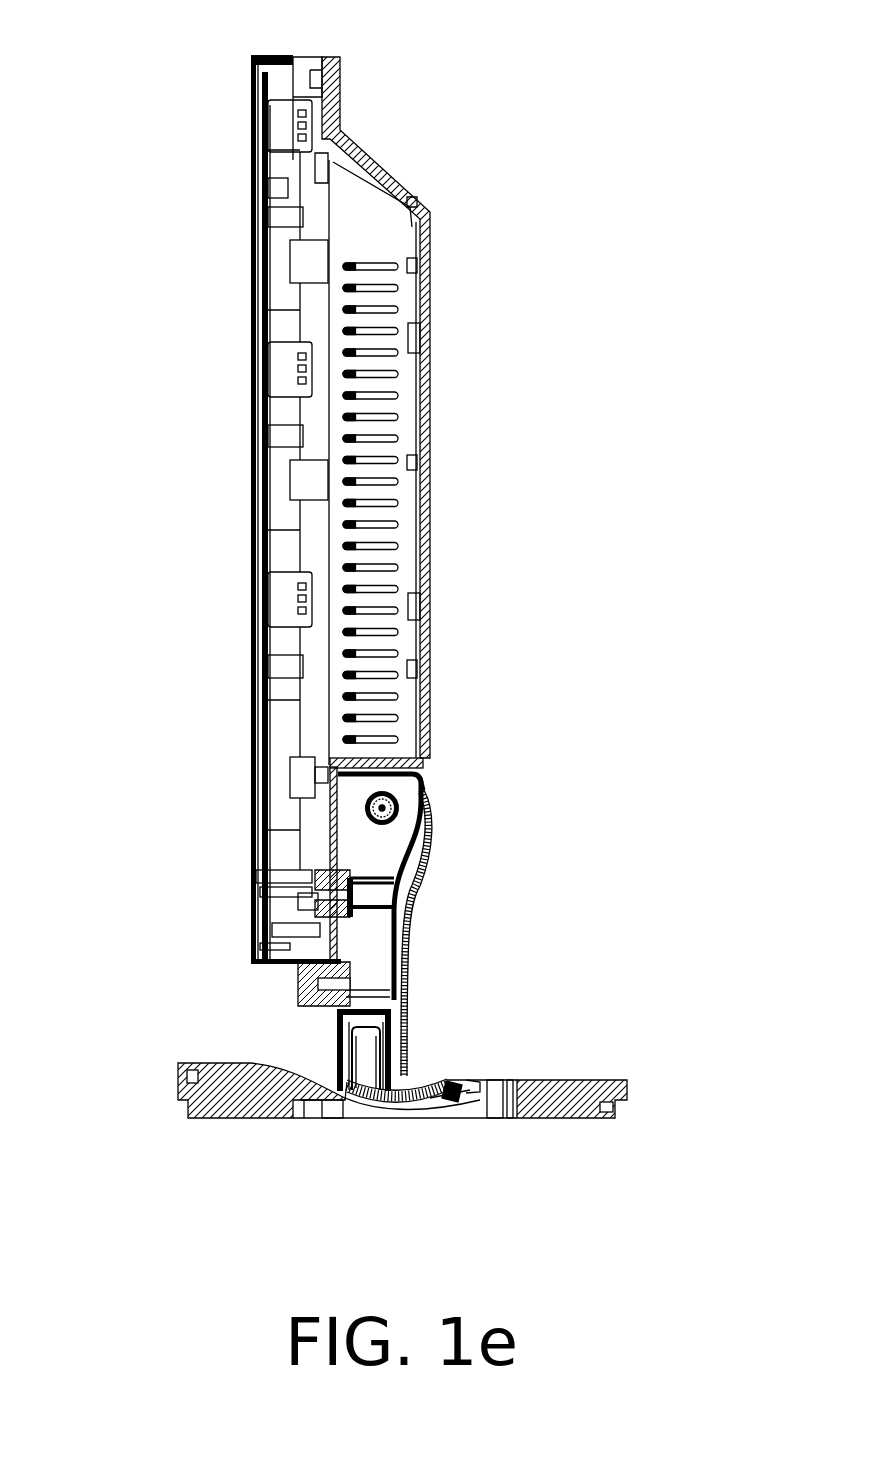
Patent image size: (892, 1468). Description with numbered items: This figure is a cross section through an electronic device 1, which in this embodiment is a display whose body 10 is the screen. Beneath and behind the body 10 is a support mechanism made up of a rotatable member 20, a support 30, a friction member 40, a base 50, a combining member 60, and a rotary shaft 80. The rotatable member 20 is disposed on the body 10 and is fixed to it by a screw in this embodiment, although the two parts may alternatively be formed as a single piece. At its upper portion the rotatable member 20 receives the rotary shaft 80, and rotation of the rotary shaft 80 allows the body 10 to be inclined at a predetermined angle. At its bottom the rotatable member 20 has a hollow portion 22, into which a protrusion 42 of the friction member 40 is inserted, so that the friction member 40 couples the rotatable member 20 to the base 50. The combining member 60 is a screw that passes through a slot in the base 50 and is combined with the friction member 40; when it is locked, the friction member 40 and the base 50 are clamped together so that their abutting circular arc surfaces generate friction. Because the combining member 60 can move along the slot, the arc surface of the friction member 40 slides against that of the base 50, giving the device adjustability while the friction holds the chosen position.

The electronic device 1 is at (149, 81).
The body 10 is at (419, 414).
The rotatable member 20 is at (404, 935).
The hollow portion 22 is at (335, 1015).
The support 30 is at (426, 870).
The friction member 40 is at (433, 1077).
The protrusion 42 is at (350, 1040).
The base 50 is at (562, 1092).
The combining member 60 is at (455, 1090).
The rotary shaft 80 is at (397, 808).